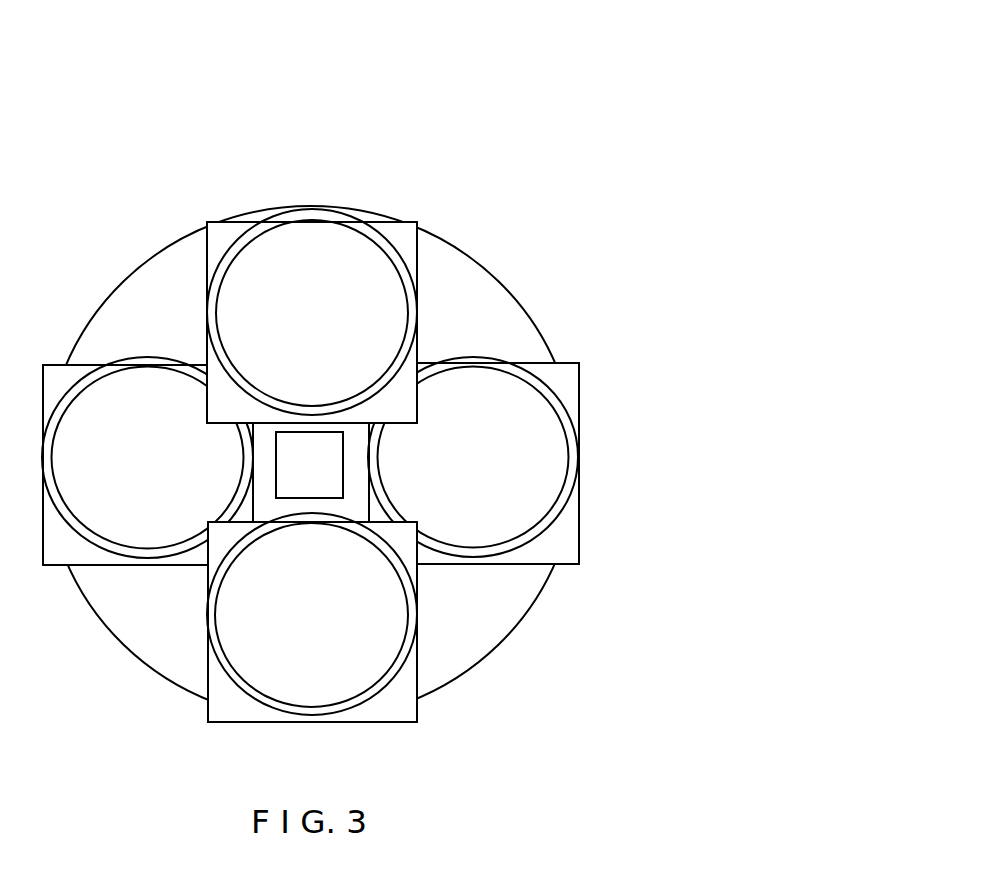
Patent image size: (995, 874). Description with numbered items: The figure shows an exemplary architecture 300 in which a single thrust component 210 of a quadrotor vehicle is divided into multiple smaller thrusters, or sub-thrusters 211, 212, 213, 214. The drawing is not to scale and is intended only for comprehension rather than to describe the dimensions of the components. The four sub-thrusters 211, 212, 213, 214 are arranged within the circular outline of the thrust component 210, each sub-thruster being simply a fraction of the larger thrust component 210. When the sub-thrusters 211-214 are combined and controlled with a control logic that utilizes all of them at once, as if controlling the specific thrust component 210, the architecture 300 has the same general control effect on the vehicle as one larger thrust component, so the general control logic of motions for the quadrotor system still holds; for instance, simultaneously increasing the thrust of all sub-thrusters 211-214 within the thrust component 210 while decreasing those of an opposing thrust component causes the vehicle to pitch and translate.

The architecture 300 is at (347, 381).
The thrust component 210 is at (460, 250).
The sub-thruster 211 is at (147, 461).
The sub-thruster 212 is at (312, 316).
The sub-thruster 213 is at (473, 460).
The sub-thruster 214 is at (312, 617).